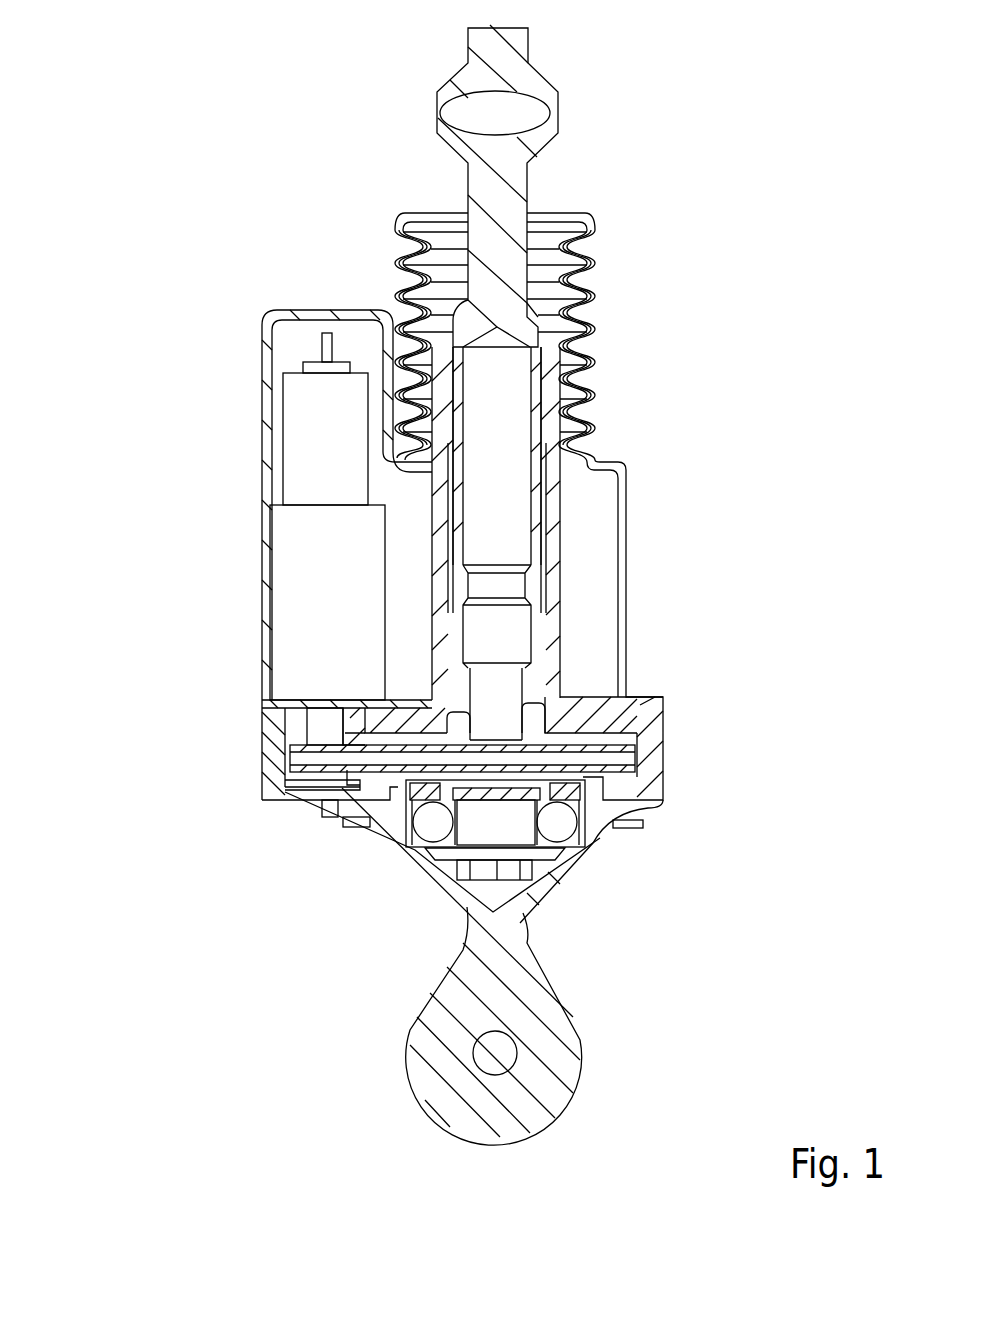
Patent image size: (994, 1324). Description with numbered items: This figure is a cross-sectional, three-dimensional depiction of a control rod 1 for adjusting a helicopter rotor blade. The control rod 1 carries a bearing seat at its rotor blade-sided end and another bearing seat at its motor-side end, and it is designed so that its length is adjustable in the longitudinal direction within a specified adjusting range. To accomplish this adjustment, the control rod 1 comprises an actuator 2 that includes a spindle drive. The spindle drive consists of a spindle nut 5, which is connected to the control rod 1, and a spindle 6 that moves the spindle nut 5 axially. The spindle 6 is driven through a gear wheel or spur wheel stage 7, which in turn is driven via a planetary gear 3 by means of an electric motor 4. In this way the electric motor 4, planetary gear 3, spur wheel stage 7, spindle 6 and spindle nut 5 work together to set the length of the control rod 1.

The control rod 1 is at (537, 193).
The actuator 2 is at (410, 622).
The planetary gear 3 is at (300, 565).
The electric motor 4 is at (318, 447).
The spindle nut 5 is at (497, 553).
The spindle 6 is at (497, 690).
The spur wheel stage 7 is at (360, 757).